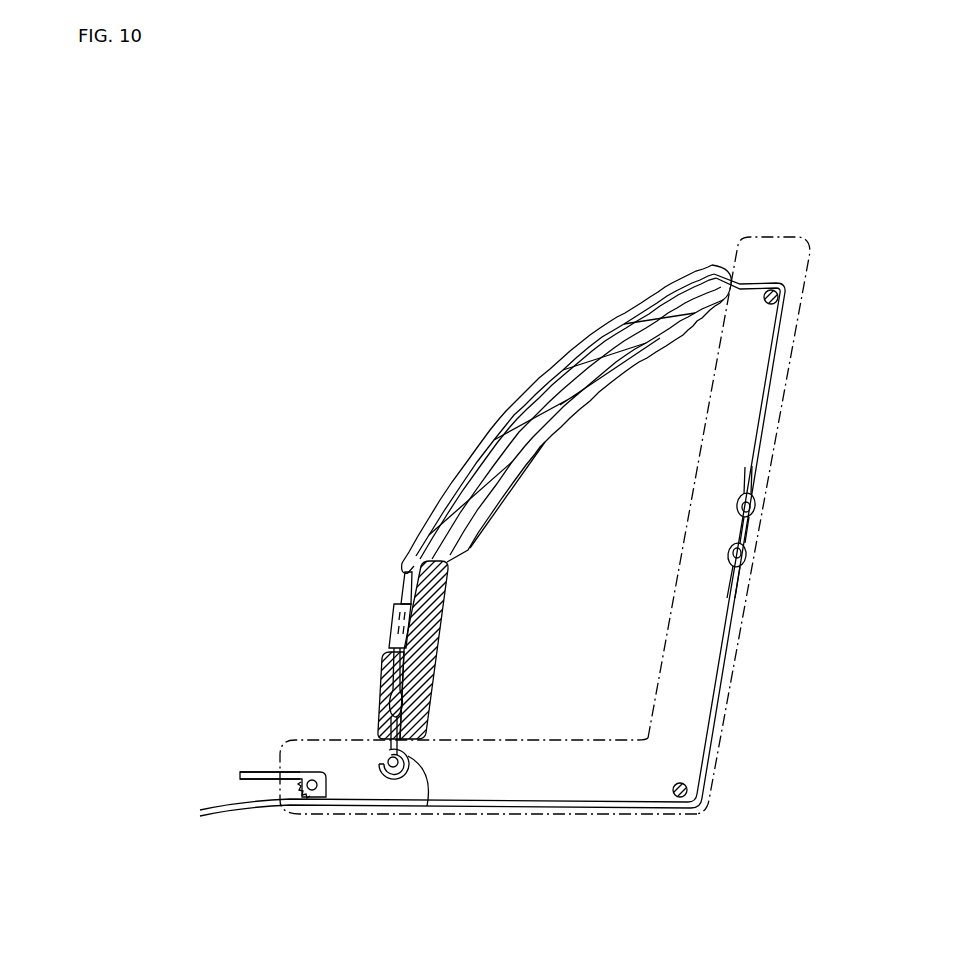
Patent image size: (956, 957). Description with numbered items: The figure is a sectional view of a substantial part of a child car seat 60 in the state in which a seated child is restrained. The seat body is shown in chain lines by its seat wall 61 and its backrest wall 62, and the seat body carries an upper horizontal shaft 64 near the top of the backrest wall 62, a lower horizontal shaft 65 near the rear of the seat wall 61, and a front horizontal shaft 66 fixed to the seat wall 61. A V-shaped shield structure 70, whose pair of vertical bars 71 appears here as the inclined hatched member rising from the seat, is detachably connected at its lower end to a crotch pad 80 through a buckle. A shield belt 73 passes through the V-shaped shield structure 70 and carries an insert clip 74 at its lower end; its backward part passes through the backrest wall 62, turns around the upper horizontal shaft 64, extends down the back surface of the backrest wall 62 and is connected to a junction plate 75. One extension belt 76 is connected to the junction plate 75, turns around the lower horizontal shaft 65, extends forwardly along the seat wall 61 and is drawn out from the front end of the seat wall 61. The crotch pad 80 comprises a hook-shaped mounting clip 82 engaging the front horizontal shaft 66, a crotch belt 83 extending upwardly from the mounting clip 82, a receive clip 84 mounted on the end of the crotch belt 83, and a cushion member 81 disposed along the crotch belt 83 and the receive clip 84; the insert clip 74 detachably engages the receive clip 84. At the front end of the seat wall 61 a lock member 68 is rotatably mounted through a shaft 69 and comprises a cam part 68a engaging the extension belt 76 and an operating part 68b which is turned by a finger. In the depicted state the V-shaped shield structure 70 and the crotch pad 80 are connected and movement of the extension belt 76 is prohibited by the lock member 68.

The child car seat 60 is at (383, 428).
The seat wall 61 is at (524, 738).
The backrest wall 62 is at (678, 548).
The upper horizontal shaft 64 is at (777, 288).
The lower horizontal shaft 65 is at (680, 800).
The front horizontal shaft 66 is at (392, 778).
The lock member 68 is at (296, 780).
The cam part 68a is at (303, 796).
The operating part 68b is at (258, 773).
The shaft 69 is at (321, 791).
The V-shaped shield structure 70 is at (567, 417).
The vertical bars 71 is at (634, 306).
The shield belt 73 is at (570, 372).
The insert clip 74 is at (405, 600).
The junction plate 75 is at (746, 531).
The extension belt 76 is at (718, 708).
The crotch pad 80 is at (400, 660).
The cushion member 81 is at (432, 600).
The mounting clip 82 is at (427, 806).
The crotch belt 83 is at (392, 672).
The receive clip 84 is at (393, 623).